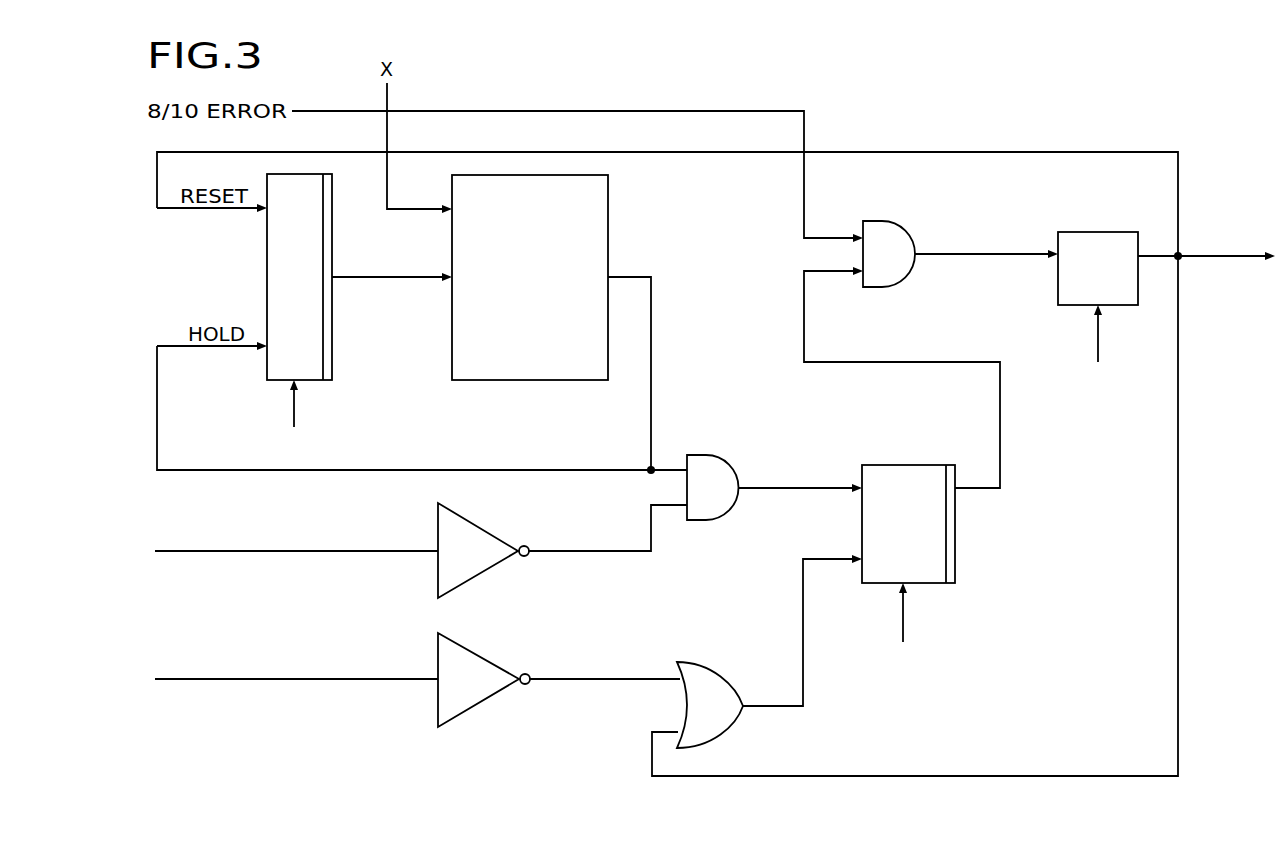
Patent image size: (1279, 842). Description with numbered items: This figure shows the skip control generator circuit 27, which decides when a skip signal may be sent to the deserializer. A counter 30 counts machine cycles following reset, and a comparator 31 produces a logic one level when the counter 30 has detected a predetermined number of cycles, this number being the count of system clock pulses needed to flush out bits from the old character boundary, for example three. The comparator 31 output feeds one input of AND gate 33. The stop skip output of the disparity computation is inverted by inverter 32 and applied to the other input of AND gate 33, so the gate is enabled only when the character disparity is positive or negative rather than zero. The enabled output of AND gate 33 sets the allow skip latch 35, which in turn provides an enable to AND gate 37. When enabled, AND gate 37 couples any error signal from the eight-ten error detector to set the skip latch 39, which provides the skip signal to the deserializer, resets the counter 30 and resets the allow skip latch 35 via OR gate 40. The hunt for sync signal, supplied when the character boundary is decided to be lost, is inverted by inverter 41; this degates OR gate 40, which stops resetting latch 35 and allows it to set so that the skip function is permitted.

The skip control generator circuit 27 is at (293, 704).
The counter 30 is at (277, 232).
The comparator 31 is at (583, 232).
The inverter 32 is at (462, 569).
The AND gate 33 is at (720, 500).
The allow skip latch 35 is at (913, 472).
The AND gate 37 is at (883, 235).
The skip latch 39 is at (1088, 245).
The OR gate 40 is at (708, 687).
The inverter 41 is at (457, 697).